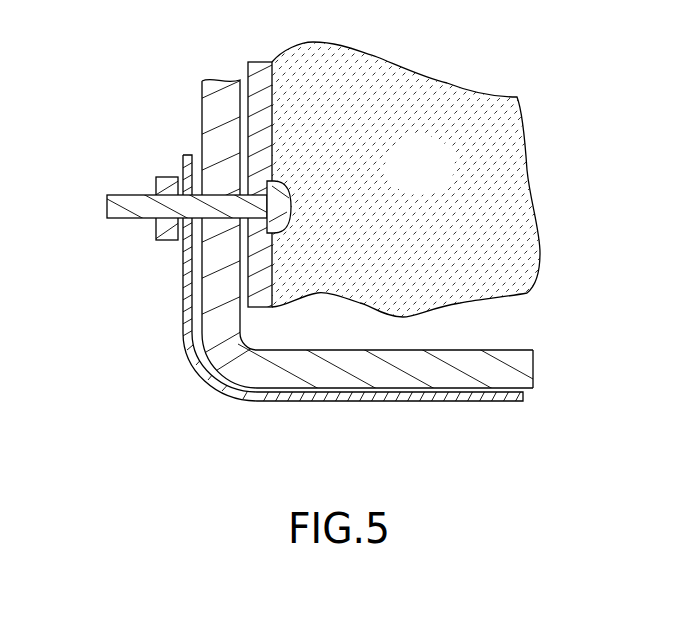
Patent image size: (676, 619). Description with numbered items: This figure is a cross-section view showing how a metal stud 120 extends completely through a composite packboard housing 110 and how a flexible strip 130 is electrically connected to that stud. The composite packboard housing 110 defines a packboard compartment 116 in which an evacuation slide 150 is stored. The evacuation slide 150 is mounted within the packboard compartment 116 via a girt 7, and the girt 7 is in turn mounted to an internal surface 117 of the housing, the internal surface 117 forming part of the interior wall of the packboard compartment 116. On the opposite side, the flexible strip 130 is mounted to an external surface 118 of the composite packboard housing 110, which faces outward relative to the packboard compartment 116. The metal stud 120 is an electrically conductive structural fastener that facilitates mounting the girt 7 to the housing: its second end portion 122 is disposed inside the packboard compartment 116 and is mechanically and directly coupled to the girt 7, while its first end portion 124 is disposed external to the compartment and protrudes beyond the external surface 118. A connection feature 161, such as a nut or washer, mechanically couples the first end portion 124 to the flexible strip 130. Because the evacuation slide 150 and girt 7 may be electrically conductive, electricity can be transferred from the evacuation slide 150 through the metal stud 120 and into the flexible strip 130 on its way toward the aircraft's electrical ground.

The girt 7 is at (260, 80).
The composite packboard housing 110 is at (447, 368).
The packboard compartment 116 is at (350, 338).
The internal surface 117 is at (528, 350).
The external surface 118 is at (530, 388).
The metal stud 120 is at (162, 185).
The second end portion 122 is at (287, 196).
The first end portion 124 is at (110, 205).
The flexible strip 130 is at (275, 399).
The evacuation slide 150 is at (398, 210).
The connection feature 161 is at (156, 183).